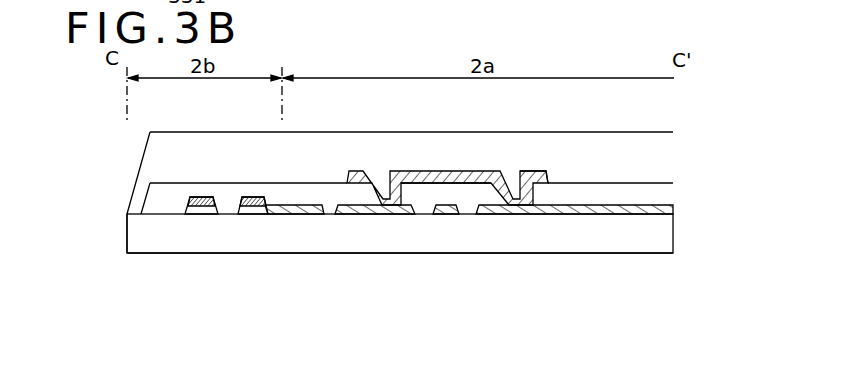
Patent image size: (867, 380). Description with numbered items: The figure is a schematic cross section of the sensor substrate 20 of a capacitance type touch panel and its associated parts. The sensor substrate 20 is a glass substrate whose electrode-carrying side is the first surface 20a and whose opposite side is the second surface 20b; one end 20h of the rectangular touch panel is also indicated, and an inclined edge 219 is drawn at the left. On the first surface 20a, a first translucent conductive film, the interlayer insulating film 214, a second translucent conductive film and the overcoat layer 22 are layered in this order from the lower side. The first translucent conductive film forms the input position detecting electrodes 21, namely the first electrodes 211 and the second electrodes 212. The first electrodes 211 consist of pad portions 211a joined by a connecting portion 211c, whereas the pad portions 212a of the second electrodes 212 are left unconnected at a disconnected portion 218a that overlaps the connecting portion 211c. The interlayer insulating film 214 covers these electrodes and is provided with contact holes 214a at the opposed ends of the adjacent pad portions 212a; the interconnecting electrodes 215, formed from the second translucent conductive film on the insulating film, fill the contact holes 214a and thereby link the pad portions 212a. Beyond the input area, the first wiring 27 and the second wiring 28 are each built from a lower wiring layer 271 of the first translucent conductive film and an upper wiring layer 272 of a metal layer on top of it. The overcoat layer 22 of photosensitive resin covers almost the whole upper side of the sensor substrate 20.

The overcoat layer 22 is at (395, 173).
The inclined side surface of upper substrate 219 is at (140, 163).
The sensor substrate 20 is at (369, 279).
The end 20h is at (127, 227).
The second surface 20b is at (588, 253).
The first surface 20a is at (500, 277).
The input position detecting electrodes 21 is at (498, 287).
The first electrodes 211 is at (334, 287).
The pad portions 211a is at (312, 212).
The second electrodes 212 is at (533, 278).
The pad portions 212a is at (653, 305).
The connecting portion 211c is at (445, 214).
The disconnected portion 218a is at (468, 213).
The first wiring 27 is at (180, 272).
The second wiring 28 is at (180, 272).
The lower wiring layer 271 is at (248, 210).
The upper wiring layer 272 is at (244, 197).
The interlayer insulating film 214 is at (484, 152).
The contact holes 214a is at (538, 186).
The interconnecting electrodes 215 is at (441, 190).